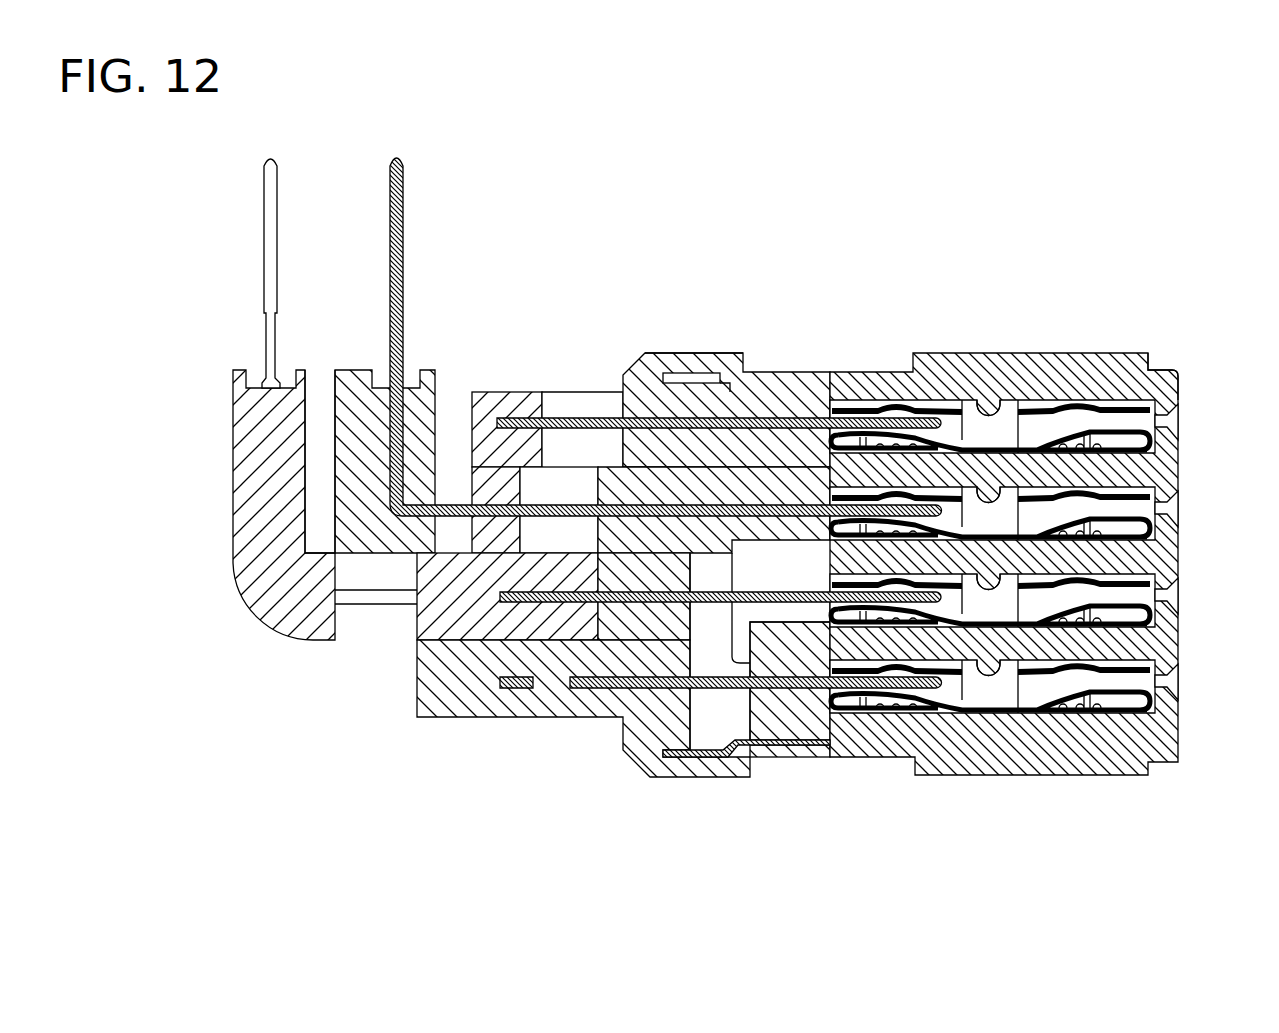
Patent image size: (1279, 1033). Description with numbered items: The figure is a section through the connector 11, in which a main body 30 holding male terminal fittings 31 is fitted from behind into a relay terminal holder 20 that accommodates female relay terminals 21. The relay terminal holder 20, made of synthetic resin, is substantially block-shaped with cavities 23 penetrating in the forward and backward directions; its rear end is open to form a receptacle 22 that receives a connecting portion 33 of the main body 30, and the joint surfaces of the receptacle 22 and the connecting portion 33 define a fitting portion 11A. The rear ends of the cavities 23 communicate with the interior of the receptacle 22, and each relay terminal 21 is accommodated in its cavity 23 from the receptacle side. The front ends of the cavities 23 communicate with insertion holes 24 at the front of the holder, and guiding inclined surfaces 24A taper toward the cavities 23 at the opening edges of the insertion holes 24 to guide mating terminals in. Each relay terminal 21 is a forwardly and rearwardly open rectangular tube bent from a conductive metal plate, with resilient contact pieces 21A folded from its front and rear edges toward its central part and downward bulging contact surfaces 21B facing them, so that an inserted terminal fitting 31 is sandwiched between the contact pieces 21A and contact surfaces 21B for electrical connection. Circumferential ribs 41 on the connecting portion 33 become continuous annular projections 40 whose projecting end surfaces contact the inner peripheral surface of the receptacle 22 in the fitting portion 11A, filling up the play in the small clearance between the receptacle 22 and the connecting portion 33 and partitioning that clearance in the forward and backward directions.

The connector 11 is at (737, 521).
The fitting portion 11A is at (662, 352).
The relay terminal holder 20 is at (823, 519).
The relay terminal 21 is at (1036, 614).
The resilient contact piece 21A is at (953, 713).
The contact surface 21B is at (883, 700).
The receptacle 22 is at (689, 383).
The cavity 23 is at (999, 400).
The insertion hole 24 is at (1165, 426).
The guiding inclined surface 24A is at (1175, 412).
The main body 30 is at (590, 726).
The male terminal fitting 31 is at (410, 513).
The connecting portion 33 is at (731, 390).
The annular projection 40 is at (719, 549).
The rib 41 is at (721, 717).